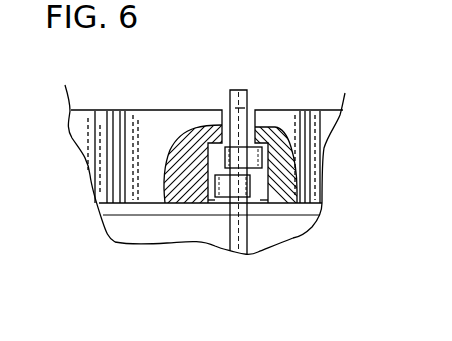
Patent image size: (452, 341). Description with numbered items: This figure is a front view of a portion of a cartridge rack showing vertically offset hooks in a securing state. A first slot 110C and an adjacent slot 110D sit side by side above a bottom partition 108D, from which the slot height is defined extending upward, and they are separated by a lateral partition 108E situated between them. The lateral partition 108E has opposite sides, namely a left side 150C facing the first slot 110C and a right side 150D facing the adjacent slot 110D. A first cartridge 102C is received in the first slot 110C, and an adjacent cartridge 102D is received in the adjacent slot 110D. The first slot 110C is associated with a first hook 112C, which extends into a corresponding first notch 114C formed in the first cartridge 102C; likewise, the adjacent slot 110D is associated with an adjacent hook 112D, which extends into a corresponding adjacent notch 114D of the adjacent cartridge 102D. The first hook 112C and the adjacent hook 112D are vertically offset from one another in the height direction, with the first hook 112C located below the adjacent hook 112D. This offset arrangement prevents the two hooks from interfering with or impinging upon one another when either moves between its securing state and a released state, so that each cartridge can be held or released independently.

The first slot 110C is at (136, 96).
The adjacent slot 110D is at (324, 96).
The first cartridge 102C is at (148, 141).
The adjacent cartridge 102D is at (323, 128).
The left side 150C is at (228, 100).
The right side 150D is at (250, 99).
The lateral partition 108E is at (243, 89).
The adjacent hook 112D is at (258, 155).
The first hook 112C is at (217, 188).
The bottom partition 108D is at (123, 209).
The first notch 114C is at (207, 163).
The adjacent notch 114D is at (259, 193).